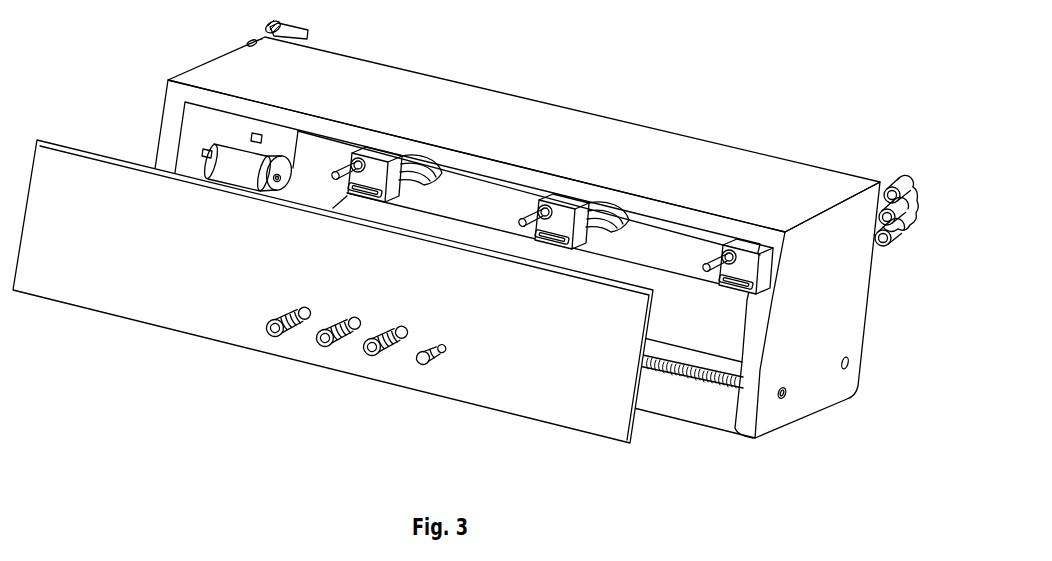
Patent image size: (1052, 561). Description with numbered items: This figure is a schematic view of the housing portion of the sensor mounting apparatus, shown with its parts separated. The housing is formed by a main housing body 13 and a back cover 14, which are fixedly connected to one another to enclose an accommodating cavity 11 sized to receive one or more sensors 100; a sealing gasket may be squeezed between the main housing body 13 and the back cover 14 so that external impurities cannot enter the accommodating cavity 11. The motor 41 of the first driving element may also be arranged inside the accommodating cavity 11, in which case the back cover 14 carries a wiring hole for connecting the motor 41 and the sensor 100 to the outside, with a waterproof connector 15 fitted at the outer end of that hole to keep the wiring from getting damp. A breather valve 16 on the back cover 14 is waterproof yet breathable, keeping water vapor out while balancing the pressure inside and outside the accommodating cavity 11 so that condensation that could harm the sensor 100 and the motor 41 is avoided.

The accommodating cavity 11 is at (735, 312).
The main housing body 13 is at (812, 400).
The back cover 14 is at (540, 390).
The waterproof connector 15 is at (330, 348).
The breather valve 16 is at (430, 368).
The motor 41 is at (230, 172).
The sensor 100 is at (382, 173).